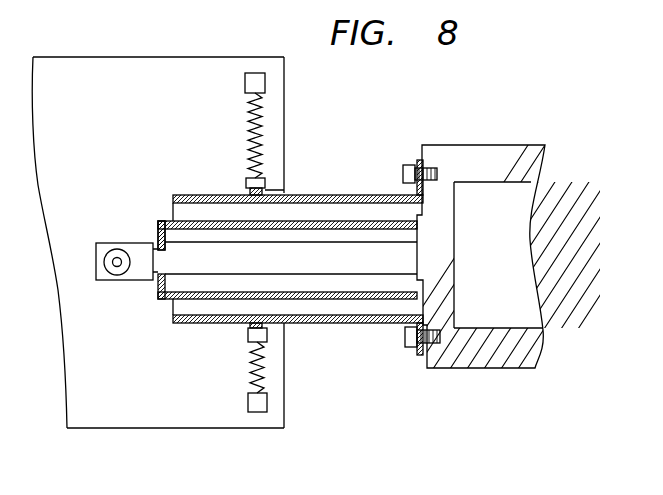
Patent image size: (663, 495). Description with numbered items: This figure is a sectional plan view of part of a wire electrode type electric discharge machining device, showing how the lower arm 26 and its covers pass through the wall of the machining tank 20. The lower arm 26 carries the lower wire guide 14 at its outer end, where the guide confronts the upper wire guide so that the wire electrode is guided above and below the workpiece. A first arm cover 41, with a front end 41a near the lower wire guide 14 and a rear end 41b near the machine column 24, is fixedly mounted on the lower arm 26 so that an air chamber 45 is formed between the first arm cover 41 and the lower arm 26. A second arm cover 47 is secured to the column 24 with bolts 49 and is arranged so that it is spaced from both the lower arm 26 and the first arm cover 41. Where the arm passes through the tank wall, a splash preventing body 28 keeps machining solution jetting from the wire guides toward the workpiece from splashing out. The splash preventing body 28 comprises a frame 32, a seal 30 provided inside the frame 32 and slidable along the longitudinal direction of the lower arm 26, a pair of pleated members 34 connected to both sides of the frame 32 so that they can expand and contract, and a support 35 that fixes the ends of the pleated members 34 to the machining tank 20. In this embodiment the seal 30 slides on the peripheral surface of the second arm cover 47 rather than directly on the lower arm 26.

The lower wire guide 14 is at (103, 300).
The machining tank 20 is at (145, 429).
The column 24 is at (450, 145).
The lower arm 26 is at (177, 276).
The splash preventing body 28 is at (277, 429).
The seal 30 is at (284, 191).
The frame 32 is at (265, 179).
The pleated members 34 is at (258, 128).
The support 35 is at (265, 83).
The first arm cover 41 is at (157, 226).
The front end 41a is at (157, 237).
The rear end 41b is at (404, 230).
The air chamber 45 is at (200, 232).
The second arm cover 47 is at (200, 325).
The bolts 49 is at (414, 348).